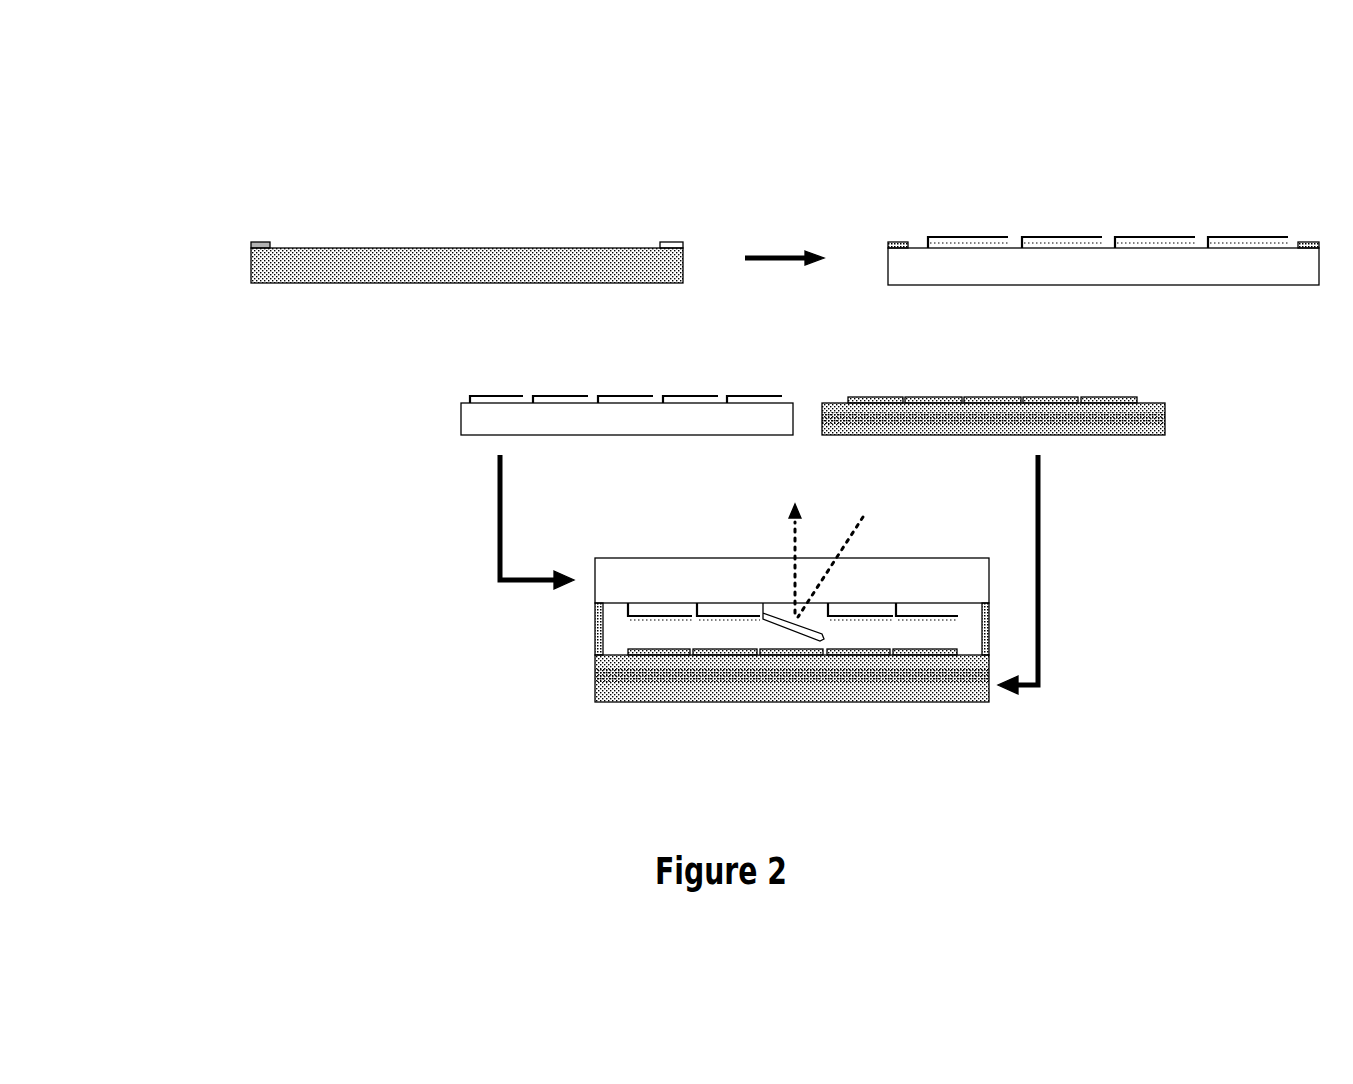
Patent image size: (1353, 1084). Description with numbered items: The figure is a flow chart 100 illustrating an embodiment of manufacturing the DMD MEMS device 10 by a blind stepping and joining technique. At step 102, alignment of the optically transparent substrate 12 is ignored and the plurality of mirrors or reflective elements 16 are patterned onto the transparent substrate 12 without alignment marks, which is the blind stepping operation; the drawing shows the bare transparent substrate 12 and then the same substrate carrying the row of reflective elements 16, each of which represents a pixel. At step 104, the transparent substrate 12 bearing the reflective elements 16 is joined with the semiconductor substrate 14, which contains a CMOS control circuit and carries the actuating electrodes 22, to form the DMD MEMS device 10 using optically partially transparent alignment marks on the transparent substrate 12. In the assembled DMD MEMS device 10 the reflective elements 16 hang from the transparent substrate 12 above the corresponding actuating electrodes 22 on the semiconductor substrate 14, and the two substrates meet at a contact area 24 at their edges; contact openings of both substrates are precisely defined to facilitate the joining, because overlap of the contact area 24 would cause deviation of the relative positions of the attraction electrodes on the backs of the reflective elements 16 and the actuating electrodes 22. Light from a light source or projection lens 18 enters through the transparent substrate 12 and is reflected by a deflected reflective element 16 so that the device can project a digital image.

The flow chart 100 is at (304, 157).
The step 102 is at (236, 273).
The step 104 is at (288, 514).
The optically transparent substrate 12 is at (472, 296).
The semiconductor substrate 14 is at (1022, 447).
The reflective elements 16 is at (1212, 228).
The projection lens 18 is at (907, 527).
The actuating electrodes 22 is at (915, 657).
The contact area 24 is at (606, 637).
The DMD MEMS device 10 is at (540, 656).